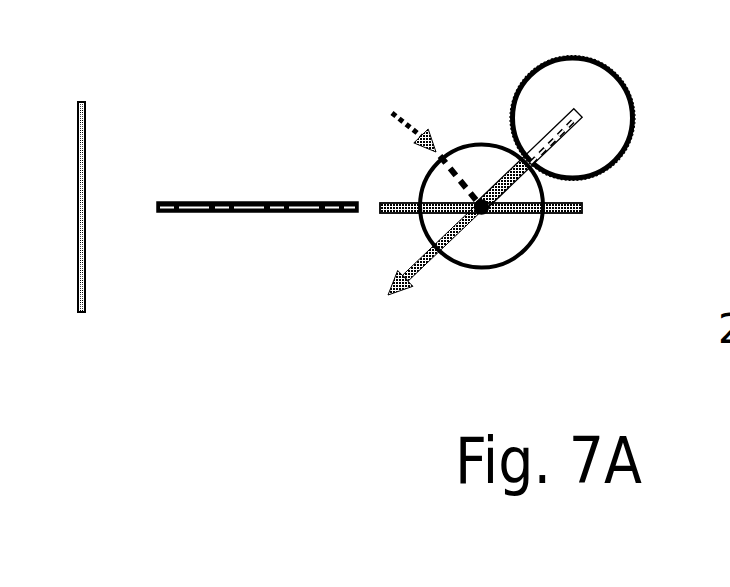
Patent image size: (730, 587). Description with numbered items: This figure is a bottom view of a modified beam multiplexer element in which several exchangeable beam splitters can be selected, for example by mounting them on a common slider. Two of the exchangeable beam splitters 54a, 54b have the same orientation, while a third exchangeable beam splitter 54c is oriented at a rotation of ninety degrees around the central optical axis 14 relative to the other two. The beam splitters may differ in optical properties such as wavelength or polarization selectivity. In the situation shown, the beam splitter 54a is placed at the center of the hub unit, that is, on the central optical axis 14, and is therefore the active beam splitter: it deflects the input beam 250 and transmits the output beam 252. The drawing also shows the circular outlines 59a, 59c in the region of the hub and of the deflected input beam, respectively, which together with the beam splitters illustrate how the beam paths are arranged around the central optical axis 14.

The central optical axis 14 is at (488, 213).
The exchangeable beam splitter 54a is at (583, 207).
The exchangeable beam splitter 54b is at (250, 202).
The third exchangeable beam splitter 54c is at (84, 108).
The first loop 59a is at (481, 250).
The second loop 59c is at (603, 88).
The input beam 250 is at (403, 136).
The output beam 252 is at (410, 273).